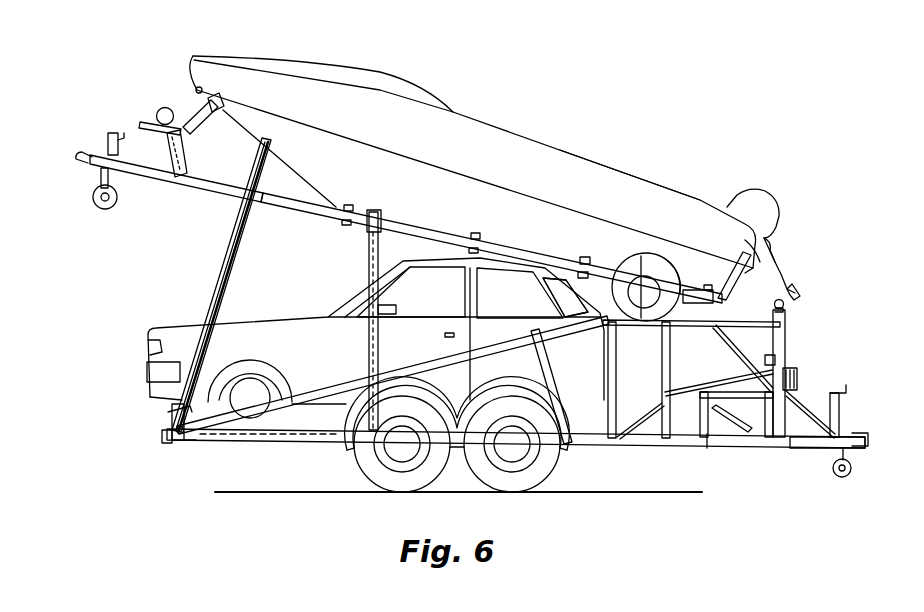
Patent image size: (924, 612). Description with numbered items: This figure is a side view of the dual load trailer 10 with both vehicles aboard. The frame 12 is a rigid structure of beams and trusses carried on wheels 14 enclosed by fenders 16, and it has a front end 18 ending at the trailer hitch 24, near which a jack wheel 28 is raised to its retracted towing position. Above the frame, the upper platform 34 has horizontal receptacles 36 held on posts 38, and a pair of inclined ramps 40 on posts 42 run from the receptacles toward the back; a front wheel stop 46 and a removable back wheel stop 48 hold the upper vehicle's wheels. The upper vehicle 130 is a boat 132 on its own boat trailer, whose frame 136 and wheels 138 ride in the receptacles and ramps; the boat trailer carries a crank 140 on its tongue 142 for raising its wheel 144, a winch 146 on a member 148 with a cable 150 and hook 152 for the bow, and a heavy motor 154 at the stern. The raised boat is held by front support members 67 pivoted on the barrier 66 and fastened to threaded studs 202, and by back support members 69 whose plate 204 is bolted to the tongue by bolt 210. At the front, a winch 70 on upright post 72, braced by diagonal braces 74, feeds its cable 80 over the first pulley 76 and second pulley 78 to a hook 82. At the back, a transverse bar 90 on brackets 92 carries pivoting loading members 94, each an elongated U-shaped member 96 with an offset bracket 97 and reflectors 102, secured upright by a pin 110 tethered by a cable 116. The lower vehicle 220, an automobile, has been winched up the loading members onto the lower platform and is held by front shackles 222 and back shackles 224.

The dual load trailer 10 is at (822, 294).
The frame 12 is at (300, 441).
The wheels 14 is at (373, 470).
The fenders 16 is at (487, 393).
The front end 18 is at (807, 448).
The trailer hitch 24 is at (857, 432).
The wheel 28 is at (851, 470).
The upper platform 34 is at (664, 302).
The receptacles 36 is at (634, 268).
The posts 38 is at (608, 362).
The ramps 40 is at (274, 378).
The posts 42 is at (330, 385).
The front wheel stop 46 is at (688, 290).
The back wheel stop 48 is at (546, 290).
The barrier 66 is at (722, 393).
The front support members 67 is at (746, 318).
The back support members 69 is at (368, 272).
The winch 70 is at (797, 380).
The upright post 72 is at (793, 410).
The braces 74 is at (718, 325).
The first pulley 76 is at (790, 306).
The second pulley 78 is at (786, 345).
The cable 80 is at (790, 356).
The hook 82 is at (676, 374).
The transverse bar 90 is at (160, 436).
The brackets 92 is at (180, 447).
The loading members 94 is at (232, 231).
The U-shaped member 96 is at (222, 270).
The offset bracket 97 is at (168, 420).
The reflectors 102 is at (192, 360).
The pin 110 is at (172, 427).
The cable 116 is at (190, 443).
The vehicle 130 is at (574, 139).
The boat 132 is at (636, 178).
The frame 136 is at (410, 225).
The wheels 138 is at (606, 257).
The crank 140 is at (122, 136).
The tongue 142 is at (178, 180).
The wheel 144 is at (93, 197).
The winch 146 is at (158, 112).
The member 148 is at (186, 157).
The cable 150 is at (200, 92).
The hook 152 is at (194, 58).
The motor 154 is at (770, 198).
The threaded studs 202 is at (720, 290).
The plate 204 is at (378, 213).
The bolt 210 is at (368, 230).
The lower vehicle 220 is at (296, 311).
The front shackles 222 is at (730, 432).
The back shackles 224 is at (220, 441).